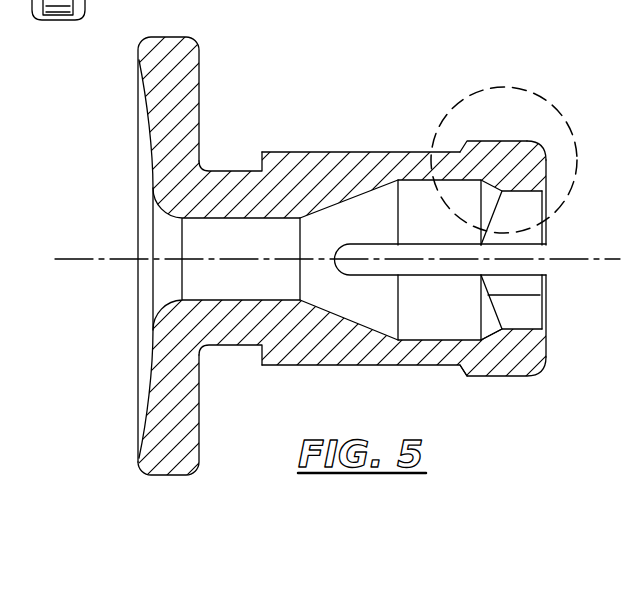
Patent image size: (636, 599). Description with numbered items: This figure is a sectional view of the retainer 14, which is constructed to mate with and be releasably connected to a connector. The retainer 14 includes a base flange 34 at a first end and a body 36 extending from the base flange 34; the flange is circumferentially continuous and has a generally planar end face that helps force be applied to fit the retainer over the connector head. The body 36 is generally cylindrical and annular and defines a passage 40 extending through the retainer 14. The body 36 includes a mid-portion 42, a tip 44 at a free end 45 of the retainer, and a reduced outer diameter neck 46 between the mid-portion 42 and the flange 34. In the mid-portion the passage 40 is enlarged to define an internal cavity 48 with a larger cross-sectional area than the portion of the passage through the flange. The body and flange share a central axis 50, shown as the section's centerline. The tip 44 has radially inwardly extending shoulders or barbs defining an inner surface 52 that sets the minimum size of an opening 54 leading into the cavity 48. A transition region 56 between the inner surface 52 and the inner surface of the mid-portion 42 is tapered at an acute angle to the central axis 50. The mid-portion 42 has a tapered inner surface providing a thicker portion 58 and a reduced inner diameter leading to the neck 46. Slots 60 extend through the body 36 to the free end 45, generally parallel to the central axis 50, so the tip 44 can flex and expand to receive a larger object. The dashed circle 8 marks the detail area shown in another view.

The detail area of FIG. 8 is at (551, 103).
The retainer 14 is at (547, 388).
The base flange 34 is at (185, 63).
The body 36 is at (333, 375).
The passage 40 is at (202, 218).
The mid-portion 42 is at (328, 152).
The tip 44 is at (495, 142).
The free end 45 is at (548, 173).
The neck 46 is at (215, 170).
The internal cavity 48 is at (417, 207).
The central axis 50 is at (98, 263).
The inner surface 52 is at (529, 212).
The opening 54 is at (546, 290).
The transition region 56 is at (490, 332).
The thicker portion 58 is at (302, 203).
The slots 60 is at (377, 253).